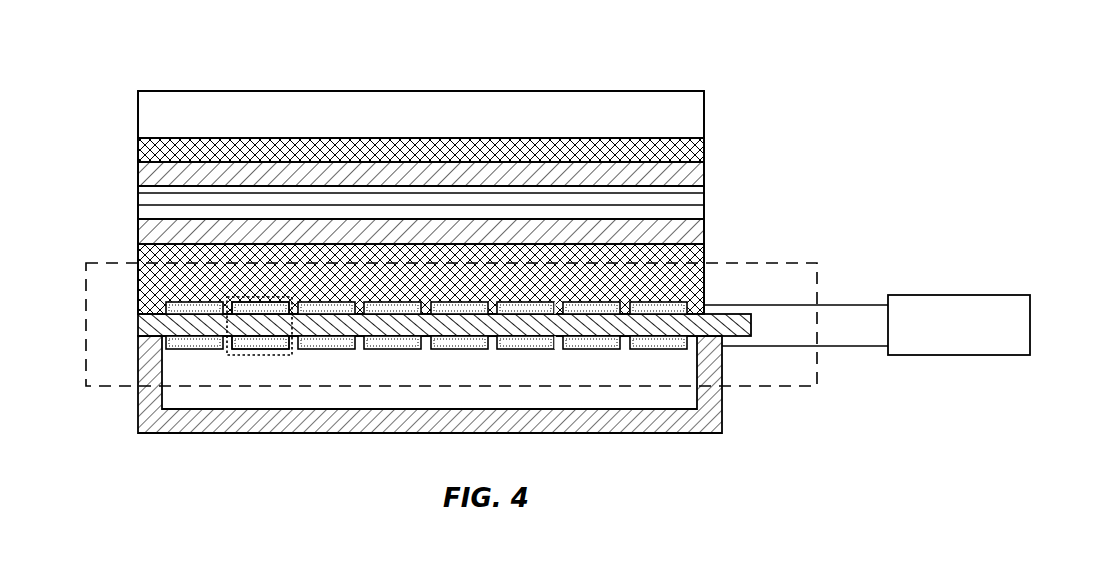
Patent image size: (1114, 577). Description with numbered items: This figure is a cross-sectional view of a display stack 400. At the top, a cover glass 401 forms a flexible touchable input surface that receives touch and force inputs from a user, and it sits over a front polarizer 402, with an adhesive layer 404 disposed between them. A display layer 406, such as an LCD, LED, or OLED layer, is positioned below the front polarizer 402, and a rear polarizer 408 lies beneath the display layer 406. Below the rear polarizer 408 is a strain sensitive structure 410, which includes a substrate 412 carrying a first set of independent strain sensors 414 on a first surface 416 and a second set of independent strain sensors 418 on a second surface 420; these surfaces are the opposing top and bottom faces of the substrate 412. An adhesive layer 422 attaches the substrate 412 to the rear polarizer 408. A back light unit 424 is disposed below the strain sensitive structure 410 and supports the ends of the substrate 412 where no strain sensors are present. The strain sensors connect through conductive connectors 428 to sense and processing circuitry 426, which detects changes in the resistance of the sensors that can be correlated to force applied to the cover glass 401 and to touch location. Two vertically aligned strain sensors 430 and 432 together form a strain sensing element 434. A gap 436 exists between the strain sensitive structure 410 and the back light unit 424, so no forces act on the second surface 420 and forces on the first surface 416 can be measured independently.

The display stack 400 is at (729, 69).
The cover glass 401 is at (138, 110).
The front polarizer 402 is at (138, 169).
The adhesive layer 404 is at (704, 148).
The display layer 406 is at (704, 203).
The rear polarizer 408 is at (138, 229).
The strain sensitive structure 410 is at (86, 313).
The substrate 412 is at (751, 325).
The first set of independent strain sensors 414 is at (158, 309).
The first surface 416 is at (558, 313).
The second set of independent strain sensors 418 is at (160, 339).
The second surface 420 is at (558, 350).
The adhesive layer 422 is at (704, 247).
The back light unit 424 is at (138, 409).
The sense and processing circuitry 426 is at (1030, 320).
The conductive connectors 428 is at (853, 347).
The strain sensor 430 is at (277, 303).
The strain sensor 432 is at (242, 342).
The strain sensing element 434 is at (230, 358).
The gap 436 is at (329, 378).